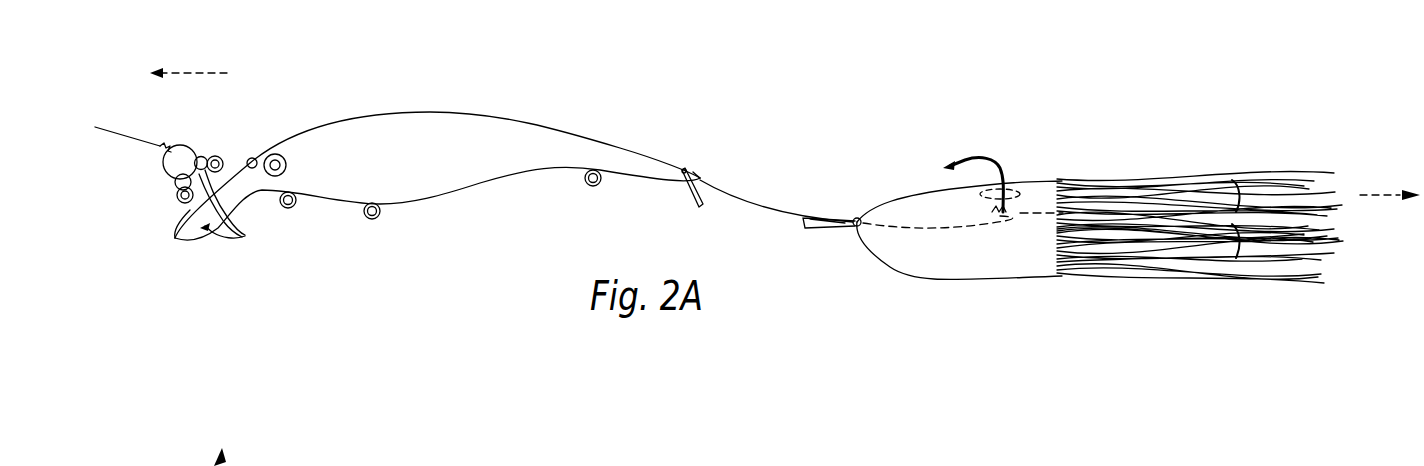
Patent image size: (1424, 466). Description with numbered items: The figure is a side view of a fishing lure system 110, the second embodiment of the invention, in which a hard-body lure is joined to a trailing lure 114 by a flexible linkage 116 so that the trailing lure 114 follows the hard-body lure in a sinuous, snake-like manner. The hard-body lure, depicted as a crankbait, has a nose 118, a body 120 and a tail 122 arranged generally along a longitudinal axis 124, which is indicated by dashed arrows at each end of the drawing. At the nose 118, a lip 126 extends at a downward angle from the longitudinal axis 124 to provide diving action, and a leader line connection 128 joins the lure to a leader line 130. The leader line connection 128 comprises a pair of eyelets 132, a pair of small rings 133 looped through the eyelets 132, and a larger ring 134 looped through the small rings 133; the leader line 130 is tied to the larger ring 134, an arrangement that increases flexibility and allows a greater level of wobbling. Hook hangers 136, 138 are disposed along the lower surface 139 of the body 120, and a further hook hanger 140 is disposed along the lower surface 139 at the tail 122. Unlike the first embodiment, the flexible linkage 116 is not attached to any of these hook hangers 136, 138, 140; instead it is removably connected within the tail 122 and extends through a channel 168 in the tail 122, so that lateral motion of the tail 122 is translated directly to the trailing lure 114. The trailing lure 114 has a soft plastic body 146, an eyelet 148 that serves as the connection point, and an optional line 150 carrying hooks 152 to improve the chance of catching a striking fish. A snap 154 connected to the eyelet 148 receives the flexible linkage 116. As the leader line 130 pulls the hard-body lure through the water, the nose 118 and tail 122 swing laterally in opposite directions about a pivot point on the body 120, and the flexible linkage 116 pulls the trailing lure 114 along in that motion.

The fishing lure system 110 is at (1073, 190).
The trailing lure 114 is at (1078, 139).
The flexible linkage 116 is at (756, 224).
The nose 118 is at (241, 231).
The body 120 is at (449, 104).
The tail 122 is at (672, 195).
The longitudinal axis 124 is at (214, 73).
The lip 126 is at (180, 247).
The leader line connection 128 is at (437, 182).
The leader line 130 is at (108, 128).
The eyelets 132 is at (240, 234).
The small rings 133 is at (193, 165).
The larger ring 134 is at (188, 143).
The hook hanger 136 is at (295, 207).
The hook hanger 138 is at (380, 212).
The lower surface 139 is at (356, 224).
The hook hanger 140 is at (590, 187).
The body 146 is at (902, 264).
The eyelet 148 is at (860, 217).
The line 150 is at (1022, 215).
The hooks 152 is at (967, 152).
The snap 154 is at (842, 217).
The channel 168 is at (696, 150).